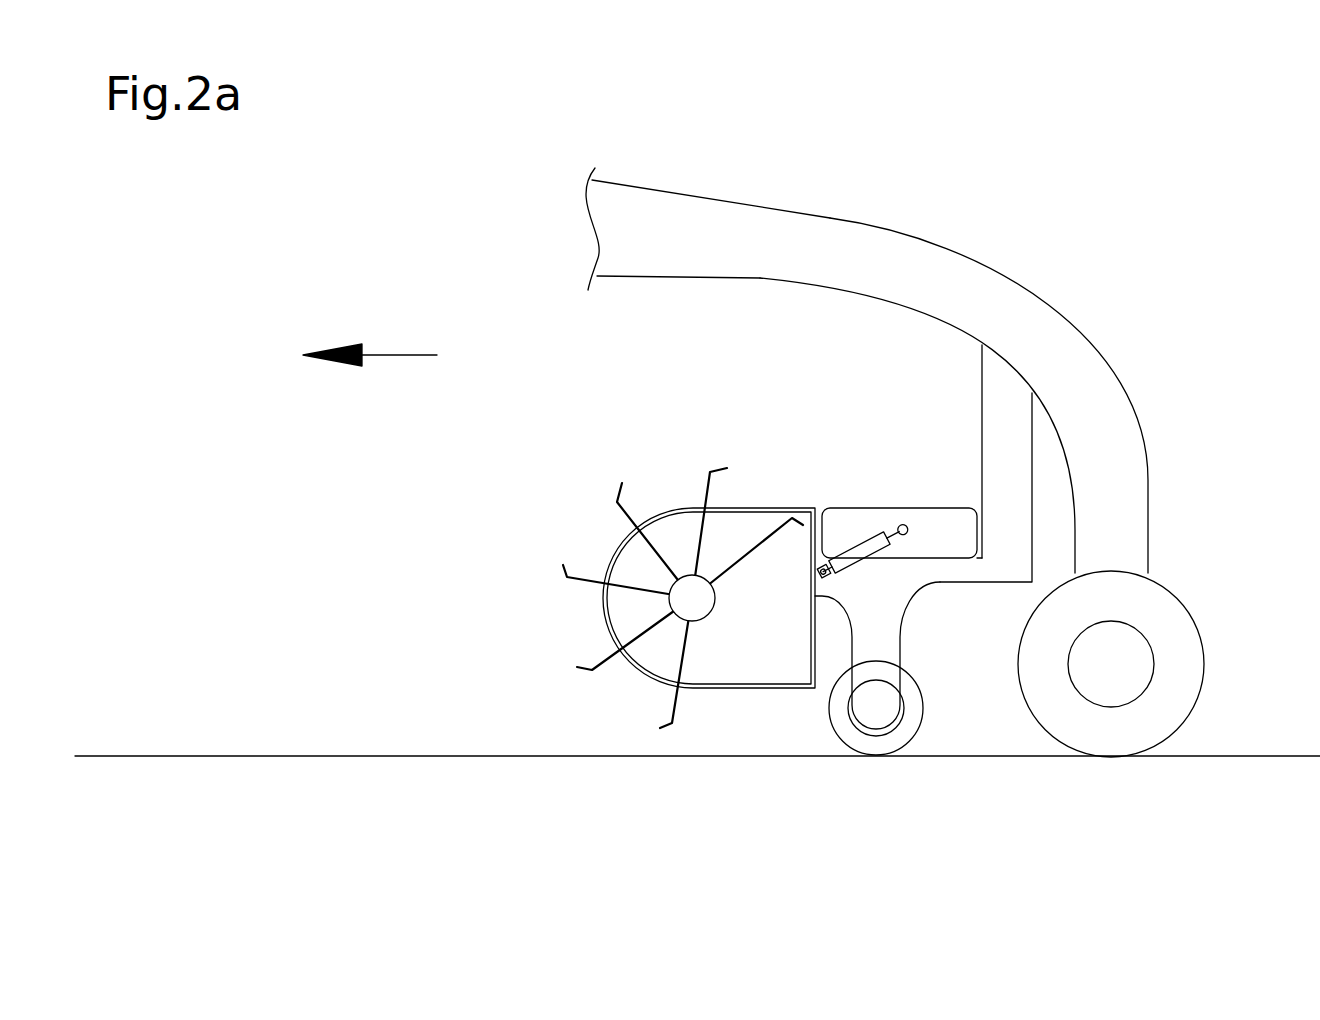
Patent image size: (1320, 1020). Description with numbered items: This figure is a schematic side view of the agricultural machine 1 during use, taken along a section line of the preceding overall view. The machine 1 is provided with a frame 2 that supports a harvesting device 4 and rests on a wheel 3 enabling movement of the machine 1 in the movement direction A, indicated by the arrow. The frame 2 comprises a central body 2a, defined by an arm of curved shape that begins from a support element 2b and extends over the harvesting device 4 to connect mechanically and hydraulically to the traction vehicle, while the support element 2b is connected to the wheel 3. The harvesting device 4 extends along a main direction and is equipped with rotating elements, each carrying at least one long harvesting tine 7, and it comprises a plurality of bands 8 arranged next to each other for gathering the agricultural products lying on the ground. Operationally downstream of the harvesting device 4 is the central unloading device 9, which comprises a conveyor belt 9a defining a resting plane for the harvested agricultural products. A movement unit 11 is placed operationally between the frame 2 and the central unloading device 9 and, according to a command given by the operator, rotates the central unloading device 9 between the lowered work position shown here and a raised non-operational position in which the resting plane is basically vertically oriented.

The agricultural machine 1 is at (1122, 188).
The frame 2 is at (776, 195).
The central body 2a is at (660, 210).
The support element 2b is at (1093, 413).
The wheel 3 is at (1157, 710).
The harvesting device 4 is at (758, 712).
The harvesting tine 7 is at (608, 663).
The band 8 is at (613, 550).
The central unloading device 9 is at (928, 552).
The conveyor belt 9a is at (958, 533).
The movement unit 11 is at (855, 548).
The movement direction A is at (337, 347).